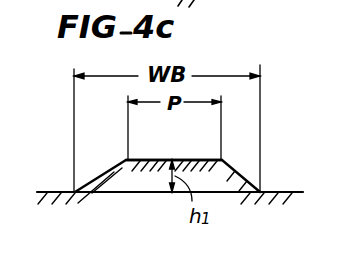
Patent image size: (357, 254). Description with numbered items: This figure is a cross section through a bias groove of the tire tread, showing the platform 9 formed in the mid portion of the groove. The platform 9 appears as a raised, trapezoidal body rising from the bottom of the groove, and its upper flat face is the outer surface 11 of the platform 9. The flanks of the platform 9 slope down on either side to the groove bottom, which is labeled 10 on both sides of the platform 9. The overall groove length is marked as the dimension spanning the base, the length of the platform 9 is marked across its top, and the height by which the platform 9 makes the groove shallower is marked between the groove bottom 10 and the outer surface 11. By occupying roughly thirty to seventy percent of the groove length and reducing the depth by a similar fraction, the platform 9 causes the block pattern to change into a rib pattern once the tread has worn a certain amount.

The platform 9 is at (140, 171).
The substrate surface 10 is at (52, 190).
The outer surface of the platform 11 is at (180, 158).